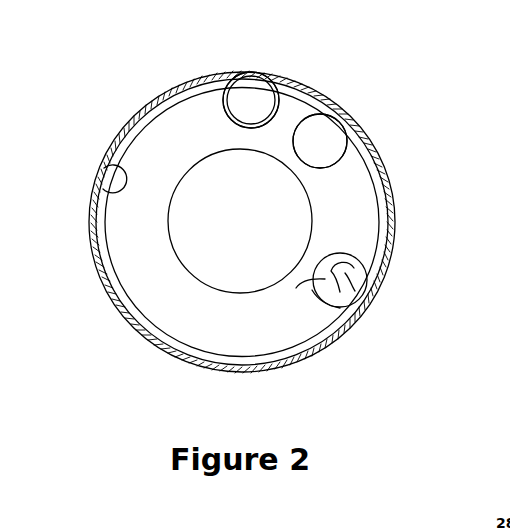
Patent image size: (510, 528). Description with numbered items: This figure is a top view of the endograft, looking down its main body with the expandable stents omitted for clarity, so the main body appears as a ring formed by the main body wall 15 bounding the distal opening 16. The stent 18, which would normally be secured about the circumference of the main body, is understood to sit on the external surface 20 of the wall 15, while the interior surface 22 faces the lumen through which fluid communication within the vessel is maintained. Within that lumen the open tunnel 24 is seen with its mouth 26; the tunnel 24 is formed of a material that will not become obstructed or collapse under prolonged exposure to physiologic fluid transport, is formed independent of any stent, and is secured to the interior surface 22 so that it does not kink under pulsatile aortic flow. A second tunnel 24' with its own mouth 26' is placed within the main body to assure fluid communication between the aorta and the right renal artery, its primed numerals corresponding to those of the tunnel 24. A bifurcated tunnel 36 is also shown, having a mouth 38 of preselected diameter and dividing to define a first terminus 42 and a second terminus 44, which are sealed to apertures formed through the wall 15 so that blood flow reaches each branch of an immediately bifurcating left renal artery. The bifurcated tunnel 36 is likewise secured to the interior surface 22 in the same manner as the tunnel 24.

The main body wall 15 is at (182, 88).
The distal opening 16 is at (206, 267).
The stent 18 is at (157, 95).
The external surface 20 is at (139, 109).
The interior surface 22 is at (100, 192).
The open tunnel 24 is at (360, 119).
The tunnel 24' is at (257, 68).
The mouth 26 is at (364, 141).
The mouth 26' is at (304, 85).
The bifurcated tunnel 36 is at (362, 270).
The mouth 38 is at (300, 288).
The first terminus 42 is at (346, 312).
The second terminus 44 is at (366, 290).